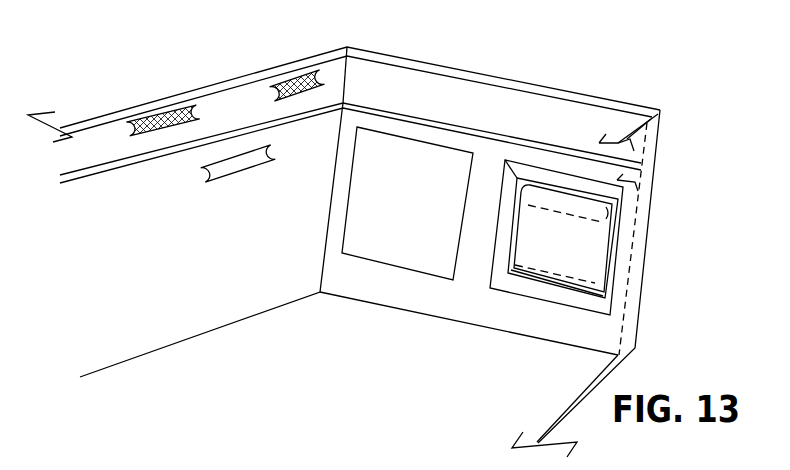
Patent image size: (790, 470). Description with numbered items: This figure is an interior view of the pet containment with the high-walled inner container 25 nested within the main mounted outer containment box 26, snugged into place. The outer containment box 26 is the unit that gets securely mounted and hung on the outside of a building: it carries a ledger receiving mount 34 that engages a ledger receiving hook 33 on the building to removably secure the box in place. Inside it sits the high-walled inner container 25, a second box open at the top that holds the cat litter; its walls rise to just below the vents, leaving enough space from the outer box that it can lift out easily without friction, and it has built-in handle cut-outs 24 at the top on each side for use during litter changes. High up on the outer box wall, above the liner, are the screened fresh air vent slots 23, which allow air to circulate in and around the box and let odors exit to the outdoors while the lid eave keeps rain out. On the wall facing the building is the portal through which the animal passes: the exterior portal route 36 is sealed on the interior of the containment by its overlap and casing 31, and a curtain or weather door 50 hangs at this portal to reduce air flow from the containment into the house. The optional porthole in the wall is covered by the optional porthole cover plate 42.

The screened fresh air vent slots 23 is at (158, 114).
The handle cut-outs 24 is at (201, 165).
The high-walled inner container 25 is at (118, 160).
The main mounted outer containment box 26 is at (306, 58).
The casing 31 is at (619, 232).
The ledger receiving hook 33 is at (640, 188).
The ledger receiving mount 34 is at (654, 140).
The exterior portal route 36 is at (518, 167).
The optional porthole cover plate 42 is at (423, 141).
The curtain or weather door 50 is at (606, 279).